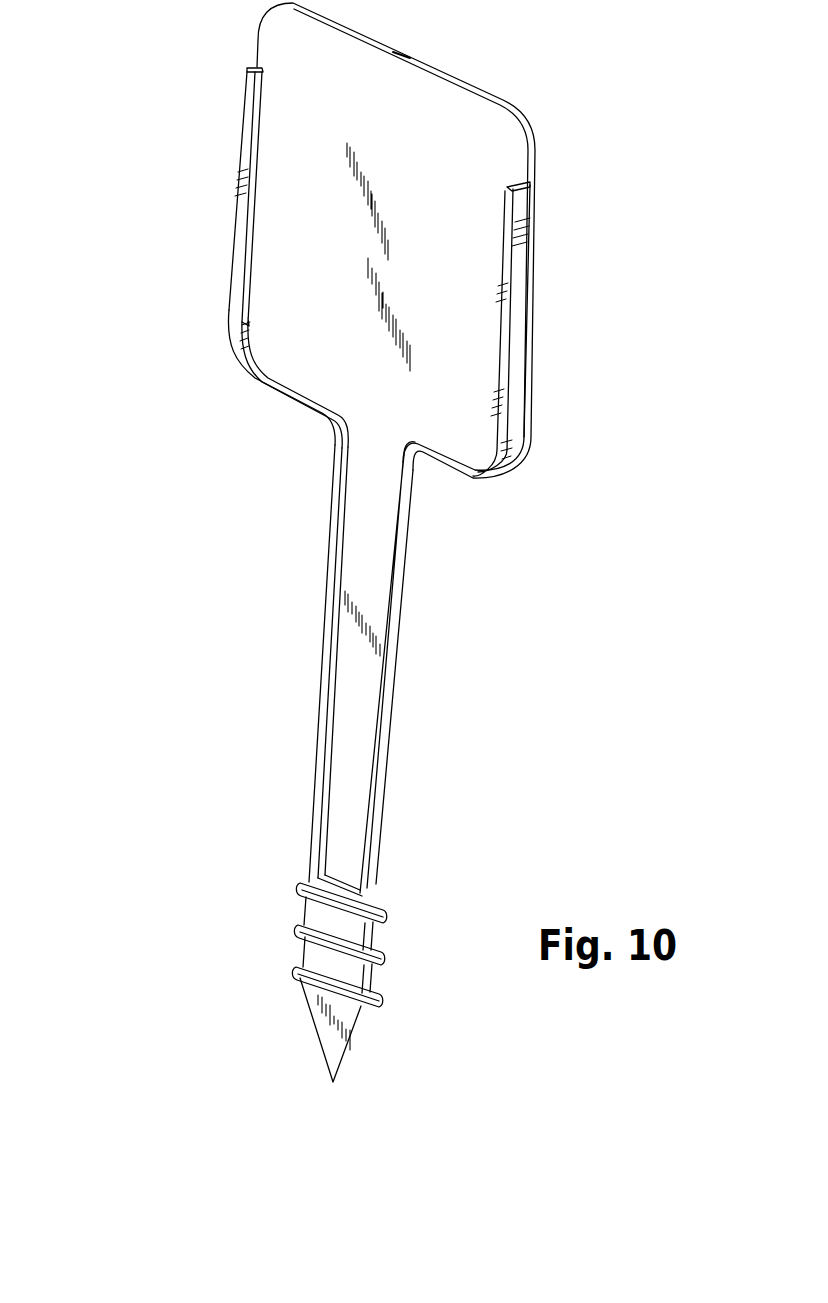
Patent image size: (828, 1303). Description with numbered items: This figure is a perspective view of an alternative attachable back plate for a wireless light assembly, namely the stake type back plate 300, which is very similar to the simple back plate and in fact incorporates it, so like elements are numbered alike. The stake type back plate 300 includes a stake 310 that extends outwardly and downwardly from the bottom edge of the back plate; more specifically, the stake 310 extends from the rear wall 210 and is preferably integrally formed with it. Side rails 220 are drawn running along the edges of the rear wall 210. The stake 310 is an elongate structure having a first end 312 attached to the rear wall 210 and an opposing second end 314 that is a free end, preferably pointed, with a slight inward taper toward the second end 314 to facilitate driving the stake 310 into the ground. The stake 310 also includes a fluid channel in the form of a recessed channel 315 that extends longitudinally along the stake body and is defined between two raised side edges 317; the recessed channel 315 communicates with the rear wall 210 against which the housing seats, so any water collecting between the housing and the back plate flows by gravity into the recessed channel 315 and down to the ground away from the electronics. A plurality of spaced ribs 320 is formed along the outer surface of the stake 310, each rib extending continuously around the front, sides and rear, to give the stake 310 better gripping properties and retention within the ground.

The stake type back plate 300 is at (555, 133).
The rear wall 210 is at (467, 197).
The side rail channel 220 is at (240, 182).
The stake 310 is at (348, 750).
The first end 312 is at (335, 425).
The recessed channel 315 is at (365, 557).
The raised side edges 317 is at (333, 518).
The ribs 320 is at (300, 928).
The second end 314 is at (333, 1082).